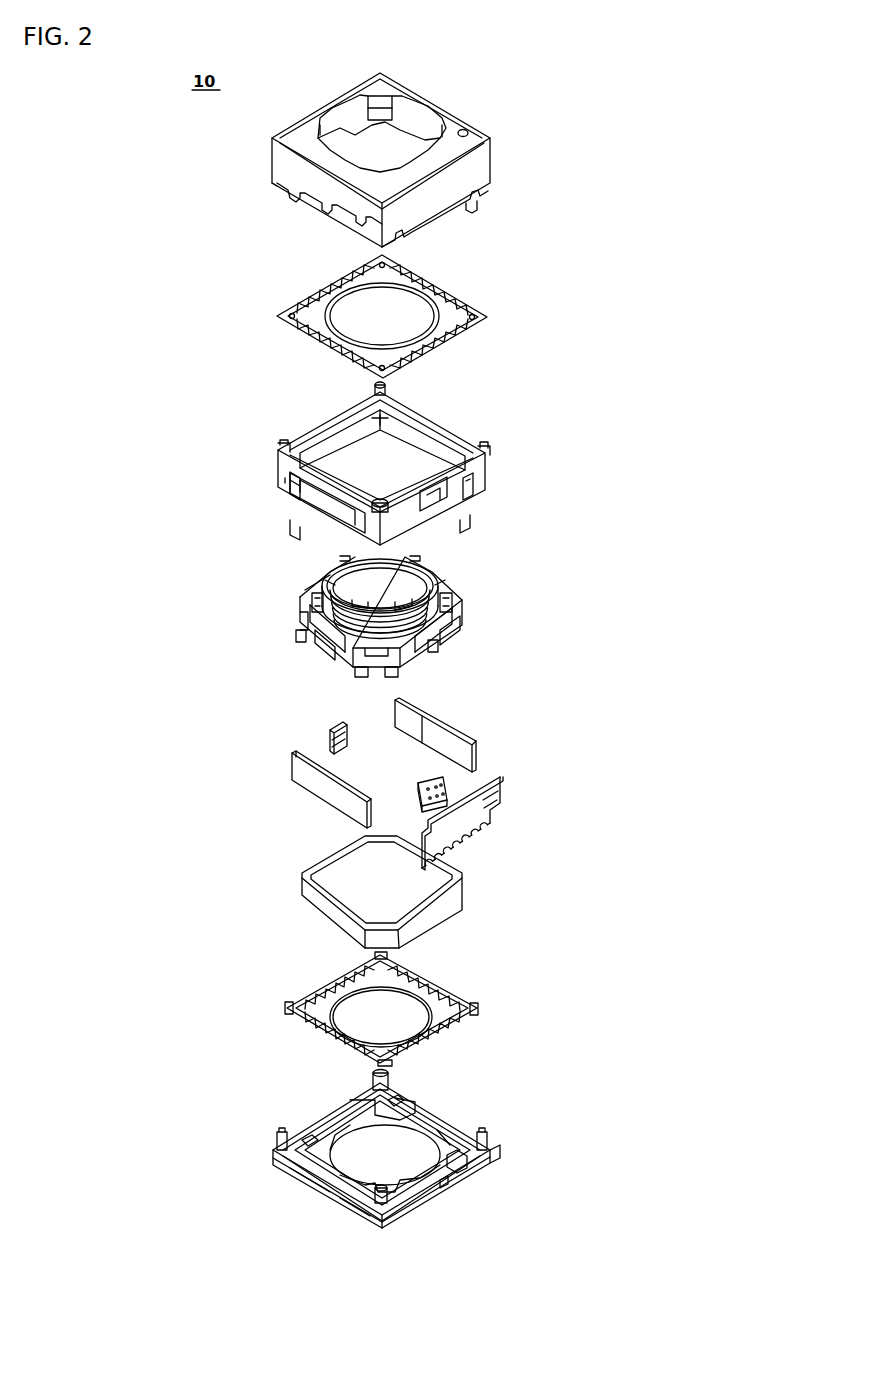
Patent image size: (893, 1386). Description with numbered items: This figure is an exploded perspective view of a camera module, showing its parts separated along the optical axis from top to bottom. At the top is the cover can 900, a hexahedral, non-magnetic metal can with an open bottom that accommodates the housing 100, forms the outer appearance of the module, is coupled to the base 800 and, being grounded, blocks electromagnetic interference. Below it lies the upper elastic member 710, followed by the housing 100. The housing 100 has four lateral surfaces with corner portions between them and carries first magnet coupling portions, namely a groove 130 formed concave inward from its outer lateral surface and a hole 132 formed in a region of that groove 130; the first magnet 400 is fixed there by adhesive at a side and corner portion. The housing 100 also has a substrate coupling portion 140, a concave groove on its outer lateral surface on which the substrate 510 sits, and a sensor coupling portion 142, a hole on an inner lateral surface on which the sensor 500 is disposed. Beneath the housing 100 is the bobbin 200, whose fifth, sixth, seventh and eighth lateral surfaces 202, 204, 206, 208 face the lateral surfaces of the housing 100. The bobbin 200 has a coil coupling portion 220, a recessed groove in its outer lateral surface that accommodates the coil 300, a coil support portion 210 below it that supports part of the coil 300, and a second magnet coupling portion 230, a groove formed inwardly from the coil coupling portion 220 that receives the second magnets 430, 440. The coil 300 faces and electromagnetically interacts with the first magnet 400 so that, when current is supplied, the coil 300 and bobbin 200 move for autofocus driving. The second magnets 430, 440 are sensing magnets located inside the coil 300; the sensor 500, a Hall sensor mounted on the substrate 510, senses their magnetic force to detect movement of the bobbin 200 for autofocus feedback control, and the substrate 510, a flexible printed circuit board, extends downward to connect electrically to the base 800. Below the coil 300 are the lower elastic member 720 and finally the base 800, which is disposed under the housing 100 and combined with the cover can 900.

The cover can 900 is at (490, 159).
The upper elastic member 710 is at (452, 300).
The housing 100 is at (396, 463).
The hole 132 is at (283, 481).
The groove 130 is at (318, 505).
The substrate coupling portion 140 is at (458, 487).
The sensor coupling portion 142 is at (480, 500).
The bobbin 200 is at (390, 610).
The seventh lateral surface 206 is at (408, 568).
The eighth lateral surface 208 is at (308, 585).
The coil coupling portion 220 is at (300, 625).
The coil support portion 210 is at (298, 637).
The fifth lateral surface 202 is at (318, 640).
The sixth lateral surface 204 is at (455, 630).
The second magnet coupling portion 230 is at (440, 648).
The second magnet 440 is at (328, 728).
The first magnet 400 is at (453, 733).
The second magnet 430 is at (417, 784).
The sensor 500 is at (495, 808).
The substrate 510 is at (500, 819).
The coil 300 is at (300, 878).
The lower elastic member 720 is at (287, 1011).
The base 800 is at (300, 1138).